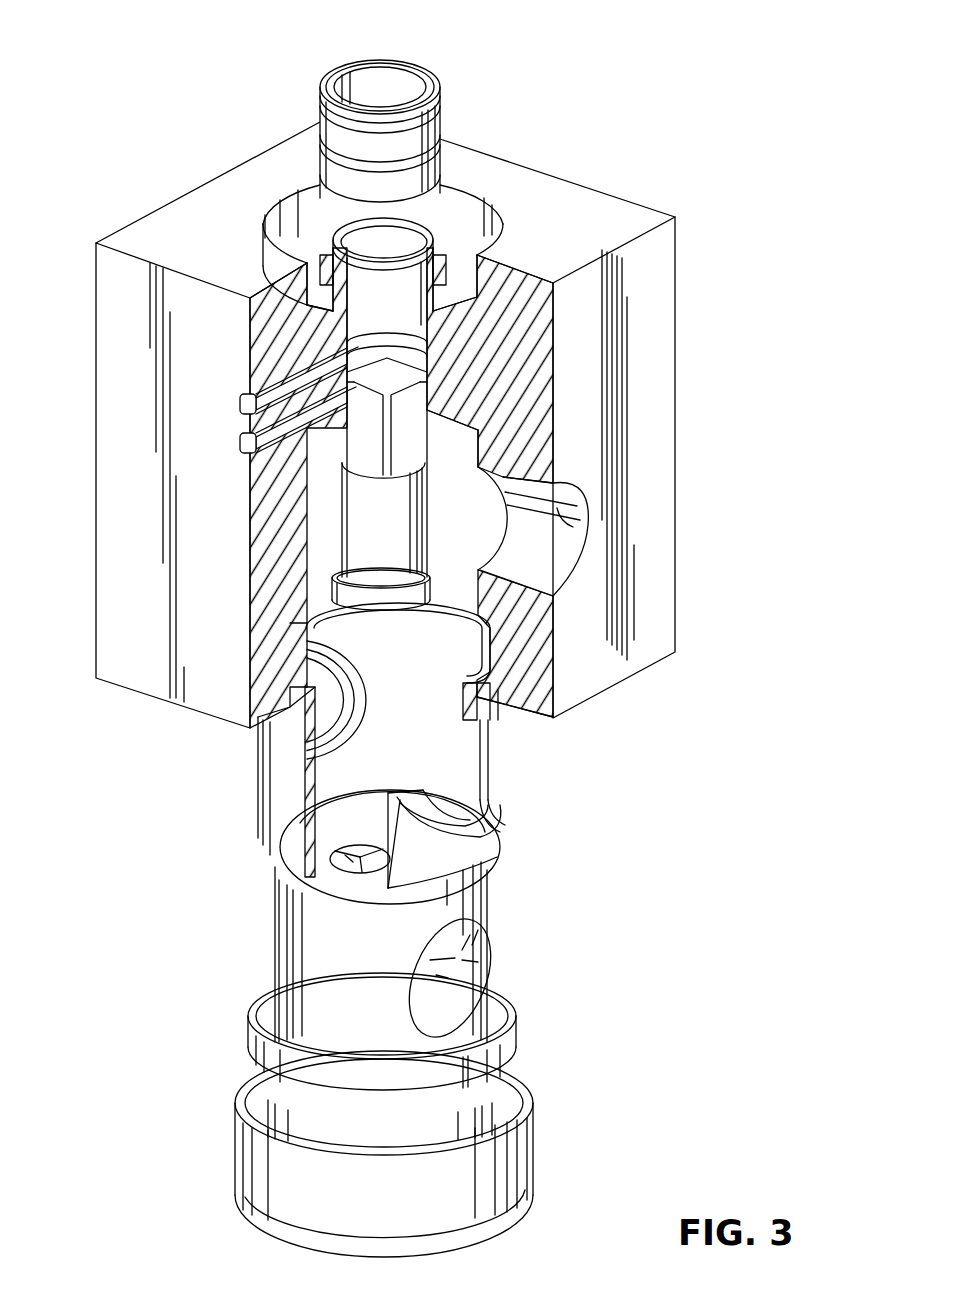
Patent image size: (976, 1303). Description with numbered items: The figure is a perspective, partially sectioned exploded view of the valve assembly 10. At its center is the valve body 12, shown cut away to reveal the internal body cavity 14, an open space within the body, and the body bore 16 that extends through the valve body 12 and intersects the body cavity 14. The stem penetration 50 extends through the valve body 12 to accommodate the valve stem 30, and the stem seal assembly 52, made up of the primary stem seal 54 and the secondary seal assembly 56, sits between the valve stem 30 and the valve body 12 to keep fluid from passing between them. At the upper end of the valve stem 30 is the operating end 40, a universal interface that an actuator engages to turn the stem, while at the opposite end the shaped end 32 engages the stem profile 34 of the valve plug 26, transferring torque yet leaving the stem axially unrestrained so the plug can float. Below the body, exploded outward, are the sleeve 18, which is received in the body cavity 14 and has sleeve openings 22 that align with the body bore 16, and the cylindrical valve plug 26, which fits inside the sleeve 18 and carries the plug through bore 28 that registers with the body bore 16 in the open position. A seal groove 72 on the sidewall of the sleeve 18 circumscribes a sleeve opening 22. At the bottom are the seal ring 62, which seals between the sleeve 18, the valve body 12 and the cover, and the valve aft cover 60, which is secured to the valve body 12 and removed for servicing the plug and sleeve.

The valve assembly 10 is at (797, 406).
The valve body 12 is at (650, 313).
The internal body cavity 14 is at (455, 518).
The body bore 16 is at (587, 537).
The sleeve 18 is at (278, 770).
The sleeve openings 22 is at (300, 680).
The valve plug 26 is at (315, 928).
The plug through bore 28 is at (478, 960).
The valve stem 30 is at (363, 530).
The shaped end 32 is at (445, 600).
The stem profile 34 is at (337, 850).
The operating end 40 is at (410, 428).
The stem penetration 50 is at (395, 298).
The stem seal assembly 52 is at (445, 44).
The primary stem seal 54 is at (347, 182).
The secondary seal assembly 56 is at (340, 143).
The valve aft cover 60 is at (503, 1160).
The seal ring 62 is at (510, 1023).
The seal groove 72 is at (440, 853).